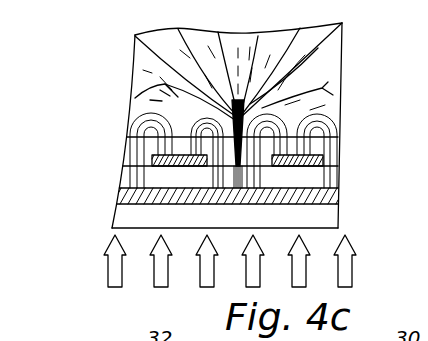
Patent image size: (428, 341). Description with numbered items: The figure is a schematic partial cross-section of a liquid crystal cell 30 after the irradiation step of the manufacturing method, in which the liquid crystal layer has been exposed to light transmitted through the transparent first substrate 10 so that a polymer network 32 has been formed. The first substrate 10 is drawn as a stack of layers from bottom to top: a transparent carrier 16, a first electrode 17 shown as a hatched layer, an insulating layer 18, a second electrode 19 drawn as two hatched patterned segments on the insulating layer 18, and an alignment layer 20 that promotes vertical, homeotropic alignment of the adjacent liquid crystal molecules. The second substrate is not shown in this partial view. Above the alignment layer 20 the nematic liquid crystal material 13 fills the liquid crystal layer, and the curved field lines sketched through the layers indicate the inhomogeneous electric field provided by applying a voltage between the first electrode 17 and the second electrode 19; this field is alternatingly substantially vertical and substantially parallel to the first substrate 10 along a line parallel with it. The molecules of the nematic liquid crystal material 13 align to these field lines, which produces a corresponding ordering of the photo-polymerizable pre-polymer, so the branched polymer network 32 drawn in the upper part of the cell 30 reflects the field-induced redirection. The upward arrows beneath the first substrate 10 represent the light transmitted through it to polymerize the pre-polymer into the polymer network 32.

The first substrate 10 is at (87, 226).
The nematic liquid crystal material 13 is at (135, 97).
The transparent carrier 16 is at (332, 217).
The first electrode 17 is at (117, 196).
The insulating layer 18 is at (332, 175).
The second electrode 19 is at (152, 158).
The alignment layer 20 is at (333, 147).
The liquid crystal cell 30 is at (353, 60).
The polymer network 32 is at (158, 56).